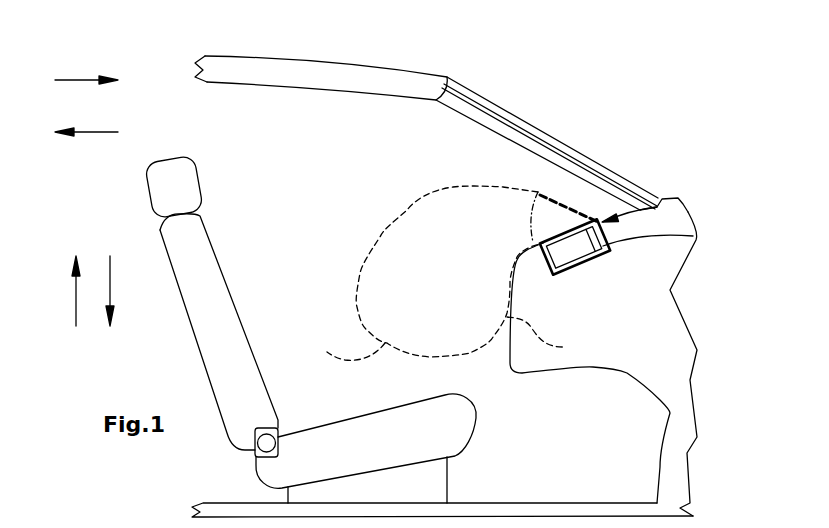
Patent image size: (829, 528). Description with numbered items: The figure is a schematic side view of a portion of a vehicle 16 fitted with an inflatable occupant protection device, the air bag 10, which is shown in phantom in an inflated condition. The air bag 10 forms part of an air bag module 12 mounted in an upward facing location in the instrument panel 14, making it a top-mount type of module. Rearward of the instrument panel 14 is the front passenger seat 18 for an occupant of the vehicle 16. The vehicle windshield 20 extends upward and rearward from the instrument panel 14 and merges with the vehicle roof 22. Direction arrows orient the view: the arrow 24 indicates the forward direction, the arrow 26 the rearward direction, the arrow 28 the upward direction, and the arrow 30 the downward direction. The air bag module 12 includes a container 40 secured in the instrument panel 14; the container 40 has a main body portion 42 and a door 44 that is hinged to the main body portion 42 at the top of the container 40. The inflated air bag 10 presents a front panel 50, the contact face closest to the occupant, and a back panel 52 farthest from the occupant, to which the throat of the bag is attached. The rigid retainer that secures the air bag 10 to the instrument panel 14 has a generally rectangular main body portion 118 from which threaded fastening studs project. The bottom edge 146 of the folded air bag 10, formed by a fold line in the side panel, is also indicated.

The air bag 10 is at (386, 208).
The air bag module 12 is at (636, 259).
The instrument panel 14 is at (668, 338).
The vehicle 16 is at (722, 448).
The front passenger seat 18 is at (308, 423).
The vehicle windshield 20 is at (527, 117).
The vehicle roof 22 is at (356, 63).
The arrow 24 is at (80, 80).
The arrow 26 is at (85, 132).
The arrow 28 is at (74, 286).
The arrow 30 is at (113, 280).
The container 40 is at (690, 215).
The main body portion 42 is at (697, 238).
The door 44 is at (563, 207).
The front panel 50 is at (453, 187).
The back panel 52 is at (550, 338).
The main body portion 118 is at (575, 270).
The bottom edge 146 is at (338, 346).